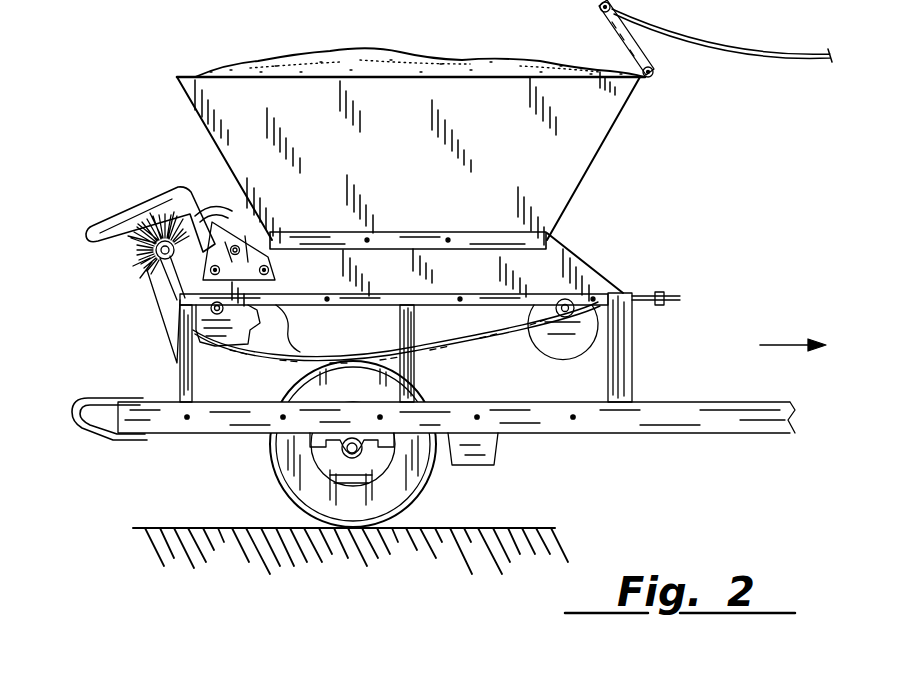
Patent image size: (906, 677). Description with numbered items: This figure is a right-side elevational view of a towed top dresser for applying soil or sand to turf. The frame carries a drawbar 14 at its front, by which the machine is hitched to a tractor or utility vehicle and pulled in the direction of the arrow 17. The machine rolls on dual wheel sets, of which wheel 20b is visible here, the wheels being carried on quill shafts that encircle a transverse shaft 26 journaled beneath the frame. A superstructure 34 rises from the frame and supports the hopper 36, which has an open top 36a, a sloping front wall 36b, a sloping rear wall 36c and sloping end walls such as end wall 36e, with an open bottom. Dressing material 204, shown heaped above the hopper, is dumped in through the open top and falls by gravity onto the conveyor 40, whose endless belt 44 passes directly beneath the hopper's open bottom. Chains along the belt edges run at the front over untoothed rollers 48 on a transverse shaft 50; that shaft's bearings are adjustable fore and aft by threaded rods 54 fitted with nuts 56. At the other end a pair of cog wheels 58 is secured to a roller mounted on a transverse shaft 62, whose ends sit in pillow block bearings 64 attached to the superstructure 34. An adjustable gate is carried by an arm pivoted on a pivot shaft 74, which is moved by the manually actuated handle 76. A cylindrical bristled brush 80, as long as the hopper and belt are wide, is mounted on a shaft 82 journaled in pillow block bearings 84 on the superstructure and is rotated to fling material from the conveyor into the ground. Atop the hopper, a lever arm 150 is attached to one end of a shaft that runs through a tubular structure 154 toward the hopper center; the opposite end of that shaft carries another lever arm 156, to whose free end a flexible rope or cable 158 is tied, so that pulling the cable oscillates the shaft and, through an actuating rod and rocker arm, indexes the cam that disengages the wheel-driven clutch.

The drawbar 14 is at (708, 438).
The arrow 17 is at (788, 345).
The wheel 20b is at (424, 490).
The transverse shaft 26 is at (344, 449).
The superstructure 34 is at (604, 252).
The hopper 36 is at (630, 146).
The open top 36a is at (195, 76).
The sloping front wall 36b is at (583, 180).
The sloping rear wall 36c is at (200, 120).
The sloping end wall 36e is at (424, 139).
The conveyor 40 is at (493, 379).
The endless belt 44 is at (368, 356).
The roller 48 is at (545, 340).
The transverse shaft 50 is at (570, 318).
The threaded rod 54 is at (662, 290).
The nut 56 is at (680, 298).
The cog wheel 58 is at (288, 313).
The transverse shaft 62 is at (208, 322).
The pillow block bearing 64 is at (247, 345).
The pivot shaft 74 is at (240, 248).
The handle 76 is at (112, 226).
The rotary bristled brush 80 is at (146, 265).
The shaft 82 is at (159, 263).
The pillow block bearing 84 is at (165, 285).
The lever arm 150 is at (642, 80).
The tubular structure 154 is at (655, 72).
The lever arm 156 is at (606, 42).
The flexible rope or cable 158 is at (764, 50).
The dressing material 204 is at (380, 55).